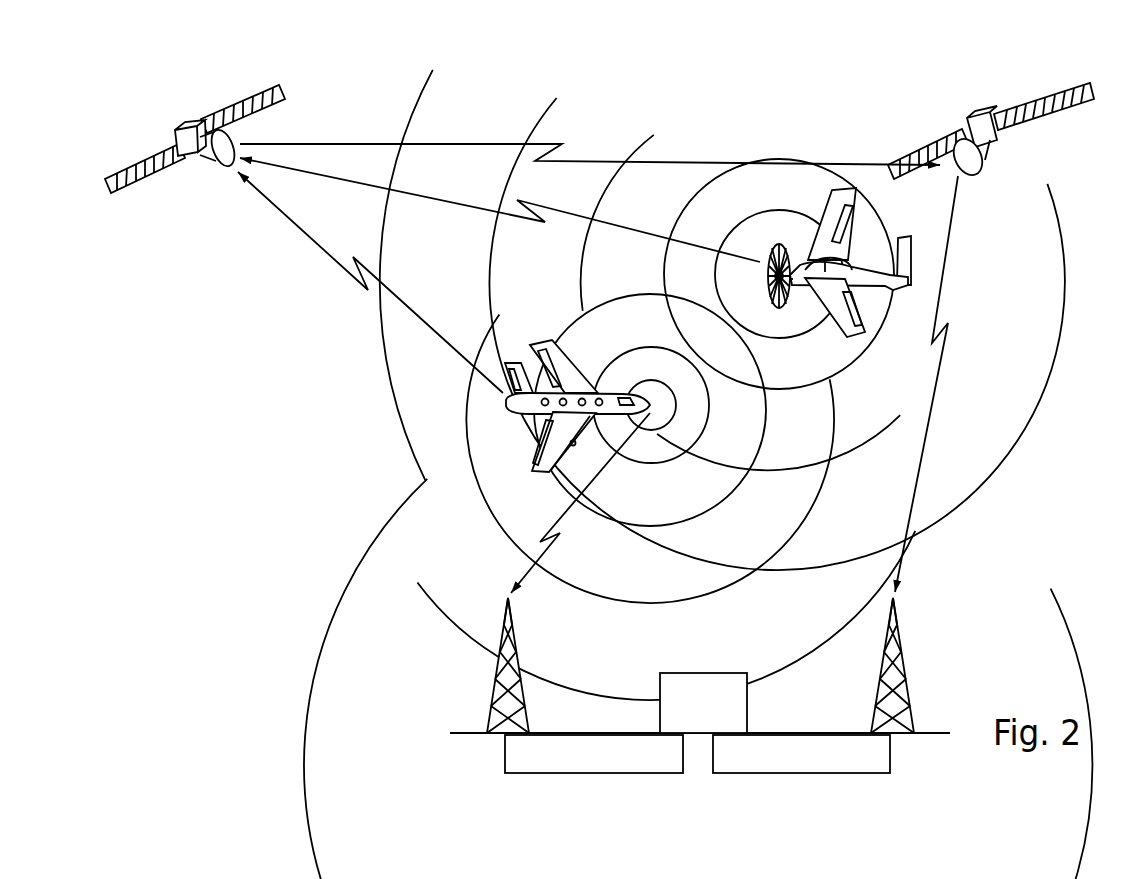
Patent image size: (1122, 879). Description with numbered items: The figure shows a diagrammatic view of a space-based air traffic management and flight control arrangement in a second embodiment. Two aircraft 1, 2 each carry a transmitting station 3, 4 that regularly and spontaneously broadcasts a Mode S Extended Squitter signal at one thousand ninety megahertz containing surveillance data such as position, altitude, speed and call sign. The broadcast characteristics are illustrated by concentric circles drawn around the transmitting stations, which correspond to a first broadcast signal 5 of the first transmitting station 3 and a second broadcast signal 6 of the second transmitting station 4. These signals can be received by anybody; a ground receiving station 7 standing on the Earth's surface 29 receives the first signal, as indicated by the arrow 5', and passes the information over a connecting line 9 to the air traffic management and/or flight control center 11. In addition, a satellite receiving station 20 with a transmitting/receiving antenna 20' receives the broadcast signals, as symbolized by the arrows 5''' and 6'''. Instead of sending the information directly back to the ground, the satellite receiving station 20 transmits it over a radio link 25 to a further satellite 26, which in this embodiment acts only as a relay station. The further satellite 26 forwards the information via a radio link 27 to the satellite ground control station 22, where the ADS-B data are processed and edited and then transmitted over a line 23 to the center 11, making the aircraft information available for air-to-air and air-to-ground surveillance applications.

The aircraft 1 is at (577, 375).
The aircraft 2 is at (832, 198).
The transmitting station 3 is at (652, 382).
The transmitting station 4 is at (768, 274).
The first 1090 ES signal 5 is at (650, 412).
The arrow 5' is at (580, 503).
The arrow 5''' is at (370, 284).
The second 1090 ES signal 6 is at (785, 274).
The arrow 6''' is at (500, 229).
The receiving station 7 is at (505, 628).
The connecting line 9 is at (584, 775).
The air traffic management and/or flight control center 11 is at (690, 713).
The satellite receiving station 20 is at (184, 139).
The transmitting/receiving antenna 20' is at (211, 175).
The satellite ground control station 22 is at (898, 641).
The line 23 is at (836, 775).
The radio link 25 is at (580, 158).
The further satellite 26 is at (975, 116).
The radio link 27 is at (932, 408).
The Earth's surface 29 is at (470, 733).